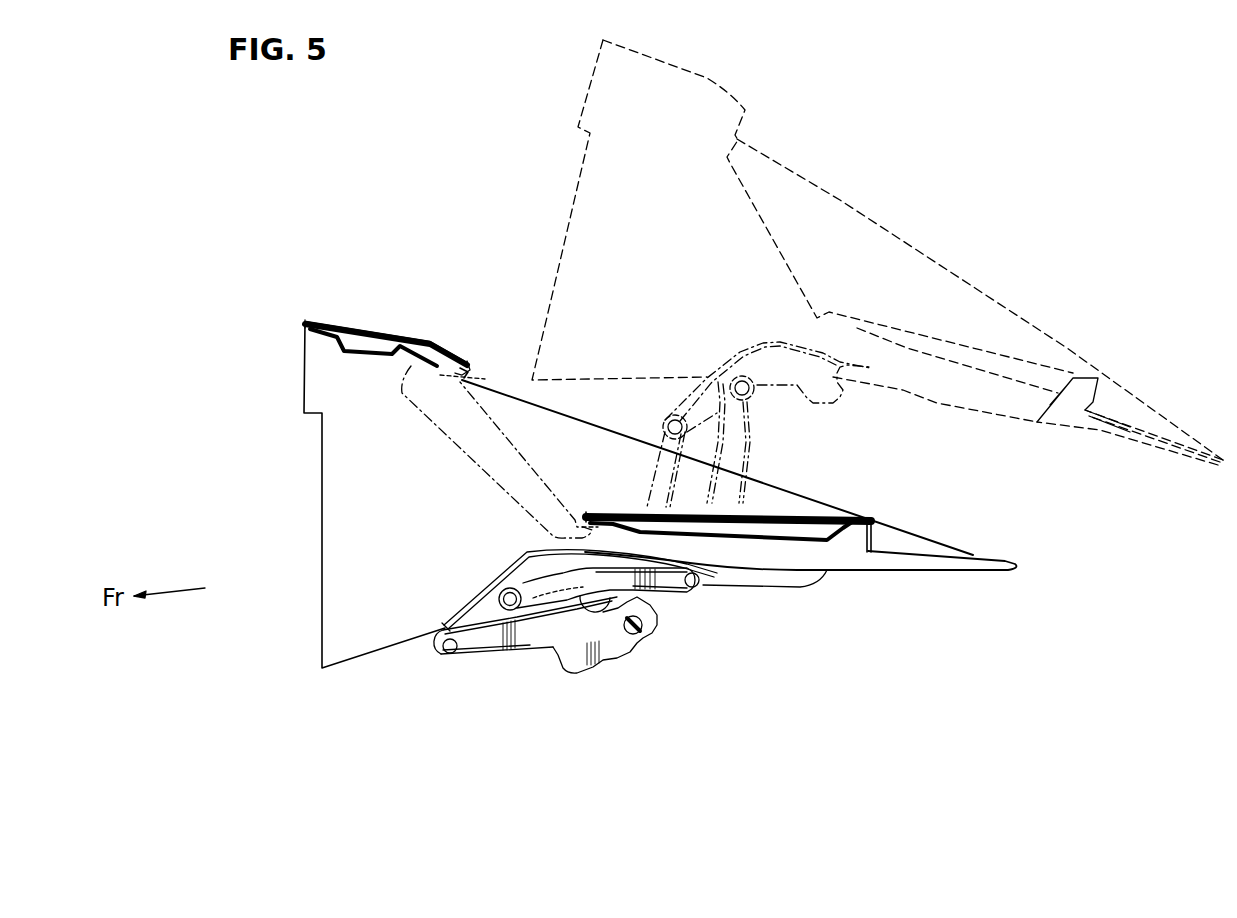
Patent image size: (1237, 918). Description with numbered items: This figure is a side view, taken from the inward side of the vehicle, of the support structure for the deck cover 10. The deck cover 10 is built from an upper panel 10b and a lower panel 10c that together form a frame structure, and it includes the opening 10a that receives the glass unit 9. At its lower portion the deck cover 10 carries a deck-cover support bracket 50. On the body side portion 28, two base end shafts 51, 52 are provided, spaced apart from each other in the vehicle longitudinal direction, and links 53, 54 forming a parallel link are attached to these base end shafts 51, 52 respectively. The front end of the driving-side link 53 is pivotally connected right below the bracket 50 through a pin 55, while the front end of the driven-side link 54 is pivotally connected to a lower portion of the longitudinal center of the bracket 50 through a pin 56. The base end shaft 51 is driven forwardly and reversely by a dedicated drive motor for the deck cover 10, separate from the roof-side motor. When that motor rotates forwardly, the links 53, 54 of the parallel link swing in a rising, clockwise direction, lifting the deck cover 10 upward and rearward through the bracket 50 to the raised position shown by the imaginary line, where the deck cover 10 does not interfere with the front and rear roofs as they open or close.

The glass unit 9 is at (519, 447).
The deck cover 10 is at (393, 309).
The opening 10a is at (463, 371).
The upper panel 10b is at (337, 340).
The lower panel 10c is at (355, 358).
The body side portion 28 is at (795, 648).
The deck-cover support bracket 50 is at (517, 558).
The base end shaft 51 is at (635, 640).
The base end shaft 52 is at (697, 588).
The link 53 is at (533, 648).
The link 54 is at (647, 560).
The pin 55 is at (448, 658).
The pin 56 is at (500, 595).